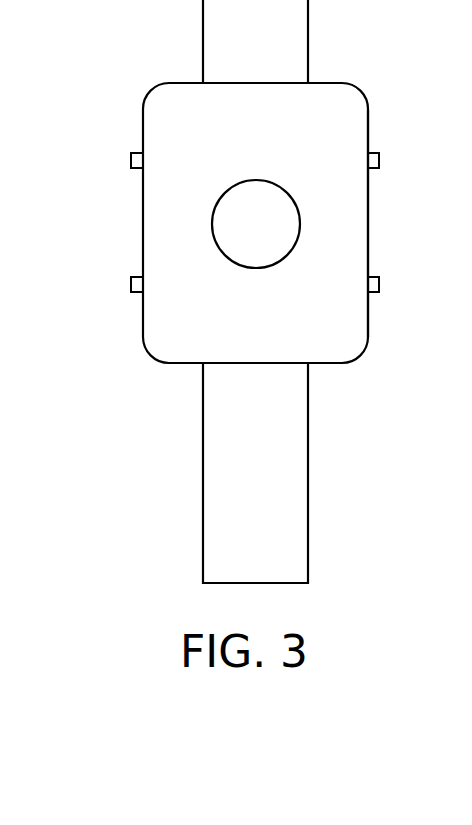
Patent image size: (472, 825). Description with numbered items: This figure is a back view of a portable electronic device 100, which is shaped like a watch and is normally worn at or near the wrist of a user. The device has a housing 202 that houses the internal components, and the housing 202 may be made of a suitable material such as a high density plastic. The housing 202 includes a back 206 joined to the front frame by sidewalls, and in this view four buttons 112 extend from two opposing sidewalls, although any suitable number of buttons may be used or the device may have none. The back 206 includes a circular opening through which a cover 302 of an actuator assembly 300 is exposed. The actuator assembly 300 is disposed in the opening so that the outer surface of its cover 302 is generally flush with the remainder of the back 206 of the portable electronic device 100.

The portable electronic device 100 is at (395, 398).
The housing 202 is at (358, 88).
The buttons 112 is at (380, 155).
The back 206 is at (352, 255).
The actuator assembly 300 is at (210, 222).
The cover 302 is at (235, 240).